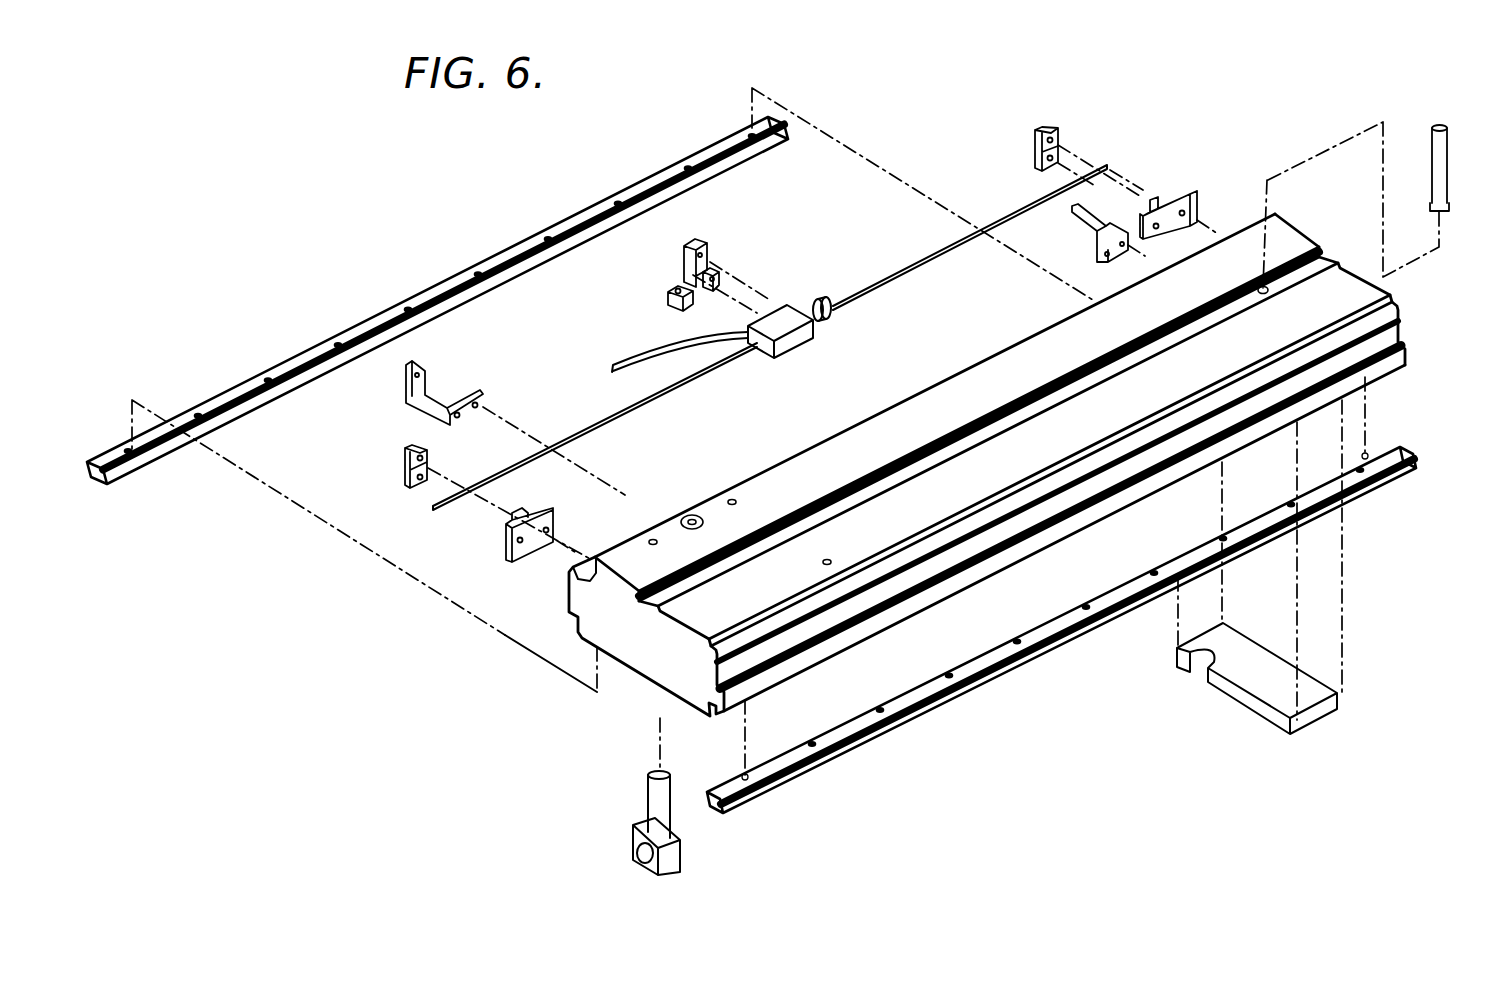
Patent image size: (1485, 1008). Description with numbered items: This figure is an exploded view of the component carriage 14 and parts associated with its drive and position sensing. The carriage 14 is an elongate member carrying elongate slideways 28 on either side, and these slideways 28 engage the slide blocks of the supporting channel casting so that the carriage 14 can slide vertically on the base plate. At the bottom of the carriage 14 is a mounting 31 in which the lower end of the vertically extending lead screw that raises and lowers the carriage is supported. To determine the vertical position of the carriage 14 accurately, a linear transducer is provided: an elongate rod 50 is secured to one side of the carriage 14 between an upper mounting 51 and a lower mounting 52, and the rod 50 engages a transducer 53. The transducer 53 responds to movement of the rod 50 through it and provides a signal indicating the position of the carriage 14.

The carriage 14 is at (655, 652).
The elongate slideways 28 is at (527, 262).
The mounting 31 is at (648, 813).
The elongate rod 50 is at (889, 280).
The upper mounting 51 is at (1162, 194).
The lower mounting 52 is at (505, 546).
The transducer 53 is at (788, 334).